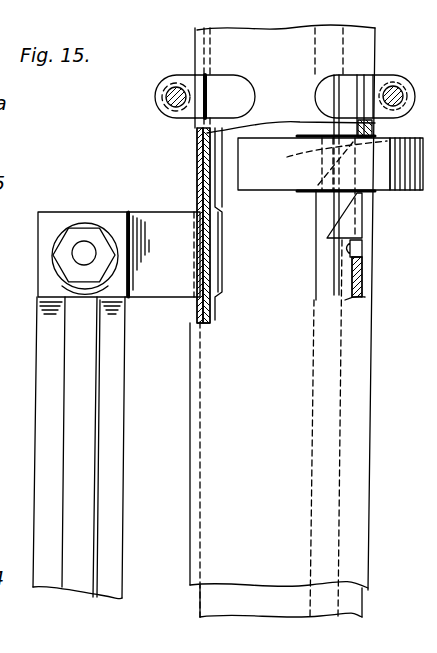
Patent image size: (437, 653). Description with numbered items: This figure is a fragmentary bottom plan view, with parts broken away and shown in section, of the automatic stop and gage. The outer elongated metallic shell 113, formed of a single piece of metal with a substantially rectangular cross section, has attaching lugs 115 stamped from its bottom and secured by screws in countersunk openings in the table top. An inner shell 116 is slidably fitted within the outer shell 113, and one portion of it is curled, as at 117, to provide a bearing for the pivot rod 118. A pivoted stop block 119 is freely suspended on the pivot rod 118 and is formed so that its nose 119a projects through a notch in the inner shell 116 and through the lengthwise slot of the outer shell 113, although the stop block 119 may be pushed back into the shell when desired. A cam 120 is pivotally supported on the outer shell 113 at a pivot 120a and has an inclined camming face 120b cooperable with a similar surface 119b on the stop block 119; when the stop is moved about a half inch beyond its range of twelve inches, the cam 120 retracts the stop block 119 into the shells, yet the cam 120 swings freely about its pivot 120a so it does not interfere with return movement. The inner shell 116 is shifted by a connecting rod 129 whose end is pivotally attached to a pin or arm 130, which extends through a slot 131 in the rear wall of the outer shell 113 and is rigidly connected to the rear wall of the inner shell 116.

The outer elongated metallic shell 113 is at (348, 435).
The attaching lugs 115 is at (176, 118).
The inner shell 116 is at (197, 176).
The curled portion 117 is at (318, 272).
The pivot rod 118 is at (318, 163).
The stop block 119 is at (265, 183).
The nose 119a is at (375, 205).
The camming surface 119b is at (380, 150).
The cam 120 is at (372, 245).
The pivot 120a is at (368, 263).
The camming face 120b is at (347, 217).
The connecting rod 129 is at (108, 478).
The pin or arm 130 is at (163, 283).
The slot 131 is at (200, 308).